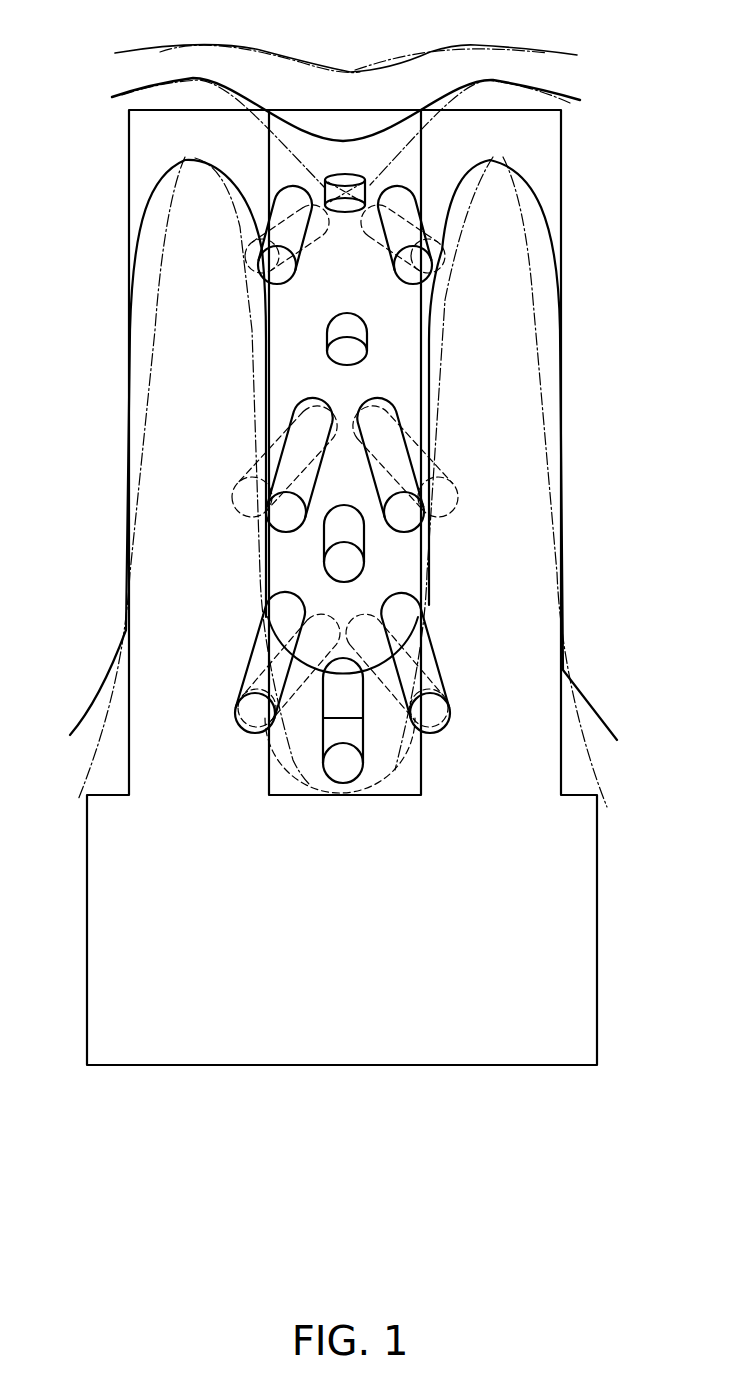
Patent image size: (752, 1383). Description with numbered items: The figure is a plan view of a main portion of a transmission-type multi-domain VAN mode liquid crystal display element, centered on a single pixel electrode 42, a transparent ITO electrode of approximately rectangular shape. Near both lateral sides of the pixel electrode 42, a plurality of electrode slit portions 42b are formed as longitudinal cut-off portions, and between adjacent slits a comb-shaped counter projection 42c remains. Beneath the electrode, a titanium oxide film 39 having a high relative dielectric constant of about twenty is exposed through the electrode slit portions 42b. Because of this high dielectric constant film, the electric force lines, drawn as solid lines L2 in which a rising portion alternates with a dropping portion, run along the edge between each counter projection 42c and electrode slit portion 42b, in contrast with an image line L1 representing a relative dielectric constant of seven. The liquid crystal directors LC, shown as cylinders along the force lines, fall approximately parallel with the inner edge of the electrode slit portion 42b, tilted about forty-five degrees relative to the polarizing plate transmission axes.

The pixel electrode 42 is at (228, 1052).
The electrode slit portion 42b is at (417, 367).
The counter projection 42c is at (138, 173).
The titanium oxide film 39 is at (410, 393).
The image line L1 is at (365, 63).
The electric force line L2 is at (317, 60).
The director LC is at (344, 615).